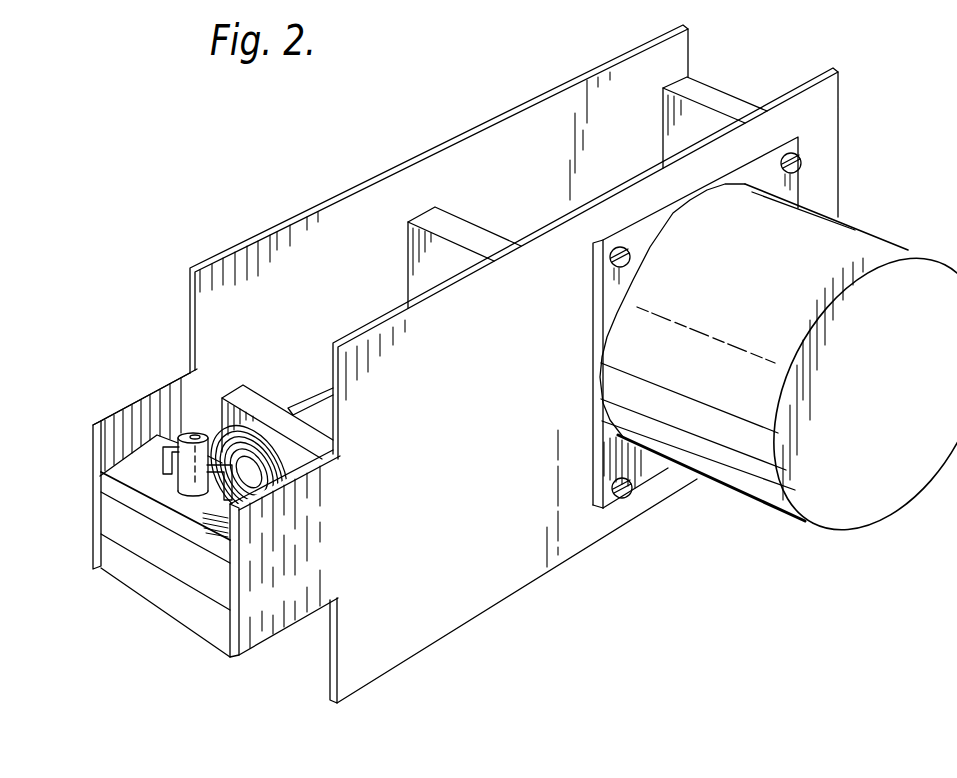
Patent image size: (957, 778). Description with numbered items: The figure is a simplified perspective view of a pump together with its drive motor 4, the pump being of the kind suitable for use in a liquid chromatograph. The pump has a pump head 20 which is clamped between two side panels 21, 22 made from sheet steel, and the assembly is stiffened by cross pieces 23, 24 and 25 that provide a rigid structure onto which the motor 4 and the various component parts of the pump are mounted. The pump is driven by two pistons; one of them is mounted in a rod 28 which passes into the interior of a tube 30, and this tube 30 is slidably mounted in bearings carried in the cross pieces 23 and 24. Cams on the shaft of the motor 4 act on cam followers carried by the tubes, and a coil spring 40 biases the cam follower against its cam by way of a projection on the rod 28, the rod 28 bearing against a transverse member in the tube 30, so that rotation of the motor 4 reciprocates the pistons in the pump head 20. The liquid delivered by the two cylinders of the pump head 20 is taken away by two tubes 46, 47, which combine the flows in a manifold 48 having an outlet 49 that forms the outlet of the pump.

The motor 4 is at (867, 240).
The pump head 20 is at (112, 520).
The side panel 21 is at (320, 202).
The side panel 22 is at (462, 345).
The cross piece 23 is at (243, 390).
The cross piece 24 is at (480, 227).
The cross piece 25 is at (713, 88).
The rod 28 is at (265, 477).
The tube 30 is at (323, 417).
The coil spring 40 is at (208, 438).
The tube 46 is at (173, 467).
The tube 47 is at (226, 504).
The manifold 48 is at (187, 463).
The outlet 49 is at (193, 436).